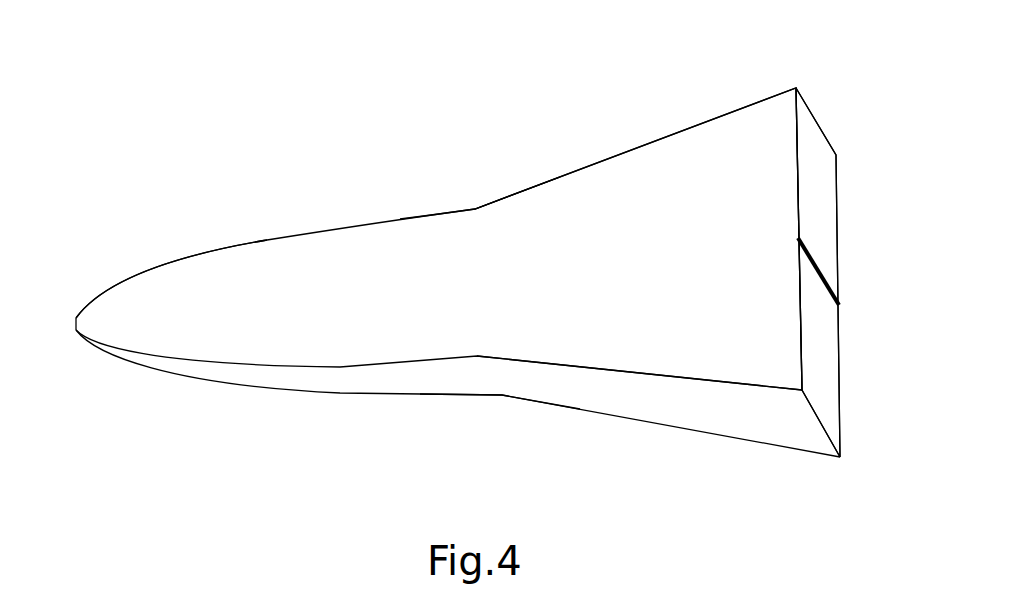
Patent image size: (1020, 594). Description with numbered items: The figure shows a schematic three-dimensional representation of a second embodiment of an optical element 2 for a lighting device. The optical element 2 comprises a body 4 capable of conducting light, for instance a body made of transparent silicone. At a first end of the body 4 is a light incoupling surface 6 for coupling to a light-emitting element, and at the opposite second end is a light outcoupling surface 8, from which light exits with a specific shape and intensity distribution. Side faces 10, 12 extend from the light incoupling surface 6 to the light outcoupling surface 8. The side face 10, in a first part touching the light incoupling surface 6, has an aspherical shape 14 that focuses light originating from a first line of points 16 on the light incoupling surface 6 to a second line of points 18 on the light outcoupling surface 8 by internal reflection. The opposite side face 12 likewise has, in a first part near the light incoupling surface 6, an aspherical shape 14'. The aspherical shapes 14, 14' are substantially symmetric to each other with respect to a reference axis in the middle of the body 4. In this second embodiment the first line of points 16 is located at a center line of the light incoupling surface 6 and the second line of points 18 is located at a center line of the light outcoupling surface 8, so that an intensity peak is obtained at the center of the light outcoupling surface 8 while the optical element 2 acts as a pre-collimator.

The optical element 2 is at (250, 93).
The body 4 is at (672, 333).
The light incoupling surface 6 is at (76, 330).
The light outcoupling surface 8 is at (825, 350).
The side face 10 is at (488, 412).
The side face 12 is at (470, 185).
The aspherical shape 14 is at (458, 401).
The aspherical shape 14' is at (172, 244).
The first line of points 16 is at (76, 325).
The second line of points 18 is at (839, 305).